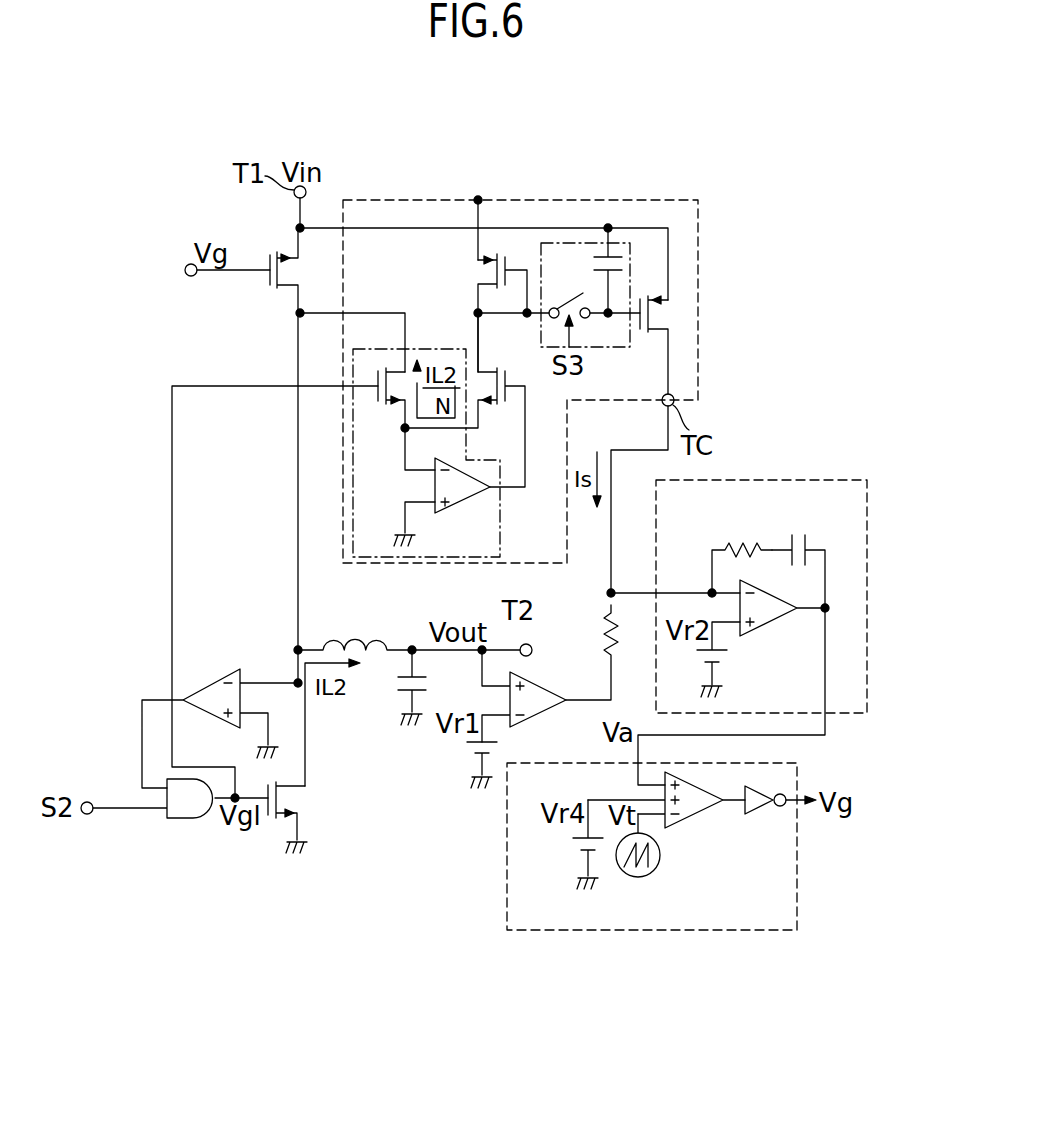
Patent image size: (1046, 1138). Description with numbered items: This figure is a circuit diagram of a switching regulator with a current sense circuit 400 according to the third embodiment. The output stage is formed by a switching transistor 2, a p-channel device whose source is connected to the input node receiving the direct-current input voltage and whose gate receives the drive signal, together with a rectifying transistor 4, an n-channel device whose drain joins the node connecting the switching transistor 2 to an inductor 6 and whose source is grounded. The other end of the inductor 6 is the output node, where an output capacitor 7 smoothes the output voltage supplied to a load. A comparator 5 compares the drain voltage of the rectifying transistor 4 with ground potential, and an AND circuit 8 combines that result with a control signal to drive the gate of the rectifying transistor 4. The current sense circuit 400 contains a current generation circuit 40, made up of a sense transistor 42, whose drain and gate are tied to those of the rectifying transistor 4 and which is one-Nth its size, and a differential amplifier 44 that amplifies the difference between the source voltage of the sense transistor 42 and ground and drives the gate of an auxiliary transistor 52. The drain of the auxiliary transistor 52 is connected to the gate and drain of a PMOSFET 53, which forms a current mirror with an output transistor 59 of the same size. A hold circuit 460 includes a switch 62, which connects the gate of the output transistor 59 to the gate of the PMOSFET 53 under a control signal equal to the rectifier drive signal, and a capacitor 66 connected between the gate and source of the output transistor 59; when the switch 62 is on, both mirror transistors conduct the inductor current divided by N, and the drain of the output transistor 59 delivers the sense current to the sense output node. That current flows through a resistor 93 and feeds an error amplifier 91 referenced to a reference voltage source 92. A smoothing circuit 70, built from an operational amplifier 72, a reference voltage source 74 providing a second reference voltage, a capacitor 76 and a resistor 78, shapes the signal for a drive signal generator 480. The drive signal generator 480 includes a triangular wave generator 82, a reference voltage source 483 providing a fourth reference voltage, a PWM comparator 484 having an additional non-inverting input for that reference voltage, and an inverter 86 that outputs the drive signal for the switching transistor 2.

The switching transistor 2 is at (290, 252).
The rectifying transistor 4 is at (288, 792).
The comparator 5 is at (209, 715).
The inductor 6 is at (359, 637).
The output capacitor 7 is at (399, 699).
The AND circuit 8 is at (186, 820).
The current generation circuit 40 is at (502, 509).
The sense transistor 42 is at (385, 405).
The differential amplifier 44 is at (463, 507).
The auxiliary transistor 52 is at (489, 405).
The PMOSFET 53 is at (481, 259).
The output transistor 59 is at (658, 332).
The switch 62 is at (569, 299).
The capacitor 66 is at (622, 258).
The smoothing circuit 70 is at (805, 480).
The operational amplifier 72 is at (782, 612).
The reference voltage source 74 is at (720, 666).
The capacitor 76 is at (806, 545).
The resistor 78 is at (743, 548).
The triangular wave generator 82 is at (653, 878).
The inverter 86 is at (766, 818).
The error amplifier 91 is at (541, 715).
The reference voltage source 92 is at (474, 760).
The resistor 93 is at (604, 630).
The current sense circuit 400 is at (626, 200).
The hold circuit 460 is at (540, 329).
The drive signal generator 480 is at (802, 882).
The reference voltage source 483 is at (578, 853).
The PWM comparator 484 is at (690, 818).